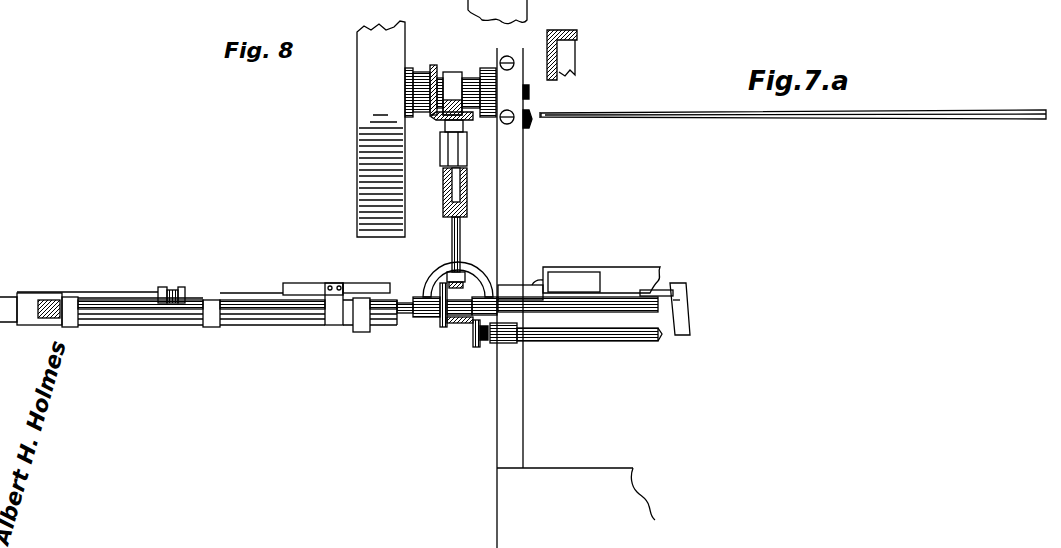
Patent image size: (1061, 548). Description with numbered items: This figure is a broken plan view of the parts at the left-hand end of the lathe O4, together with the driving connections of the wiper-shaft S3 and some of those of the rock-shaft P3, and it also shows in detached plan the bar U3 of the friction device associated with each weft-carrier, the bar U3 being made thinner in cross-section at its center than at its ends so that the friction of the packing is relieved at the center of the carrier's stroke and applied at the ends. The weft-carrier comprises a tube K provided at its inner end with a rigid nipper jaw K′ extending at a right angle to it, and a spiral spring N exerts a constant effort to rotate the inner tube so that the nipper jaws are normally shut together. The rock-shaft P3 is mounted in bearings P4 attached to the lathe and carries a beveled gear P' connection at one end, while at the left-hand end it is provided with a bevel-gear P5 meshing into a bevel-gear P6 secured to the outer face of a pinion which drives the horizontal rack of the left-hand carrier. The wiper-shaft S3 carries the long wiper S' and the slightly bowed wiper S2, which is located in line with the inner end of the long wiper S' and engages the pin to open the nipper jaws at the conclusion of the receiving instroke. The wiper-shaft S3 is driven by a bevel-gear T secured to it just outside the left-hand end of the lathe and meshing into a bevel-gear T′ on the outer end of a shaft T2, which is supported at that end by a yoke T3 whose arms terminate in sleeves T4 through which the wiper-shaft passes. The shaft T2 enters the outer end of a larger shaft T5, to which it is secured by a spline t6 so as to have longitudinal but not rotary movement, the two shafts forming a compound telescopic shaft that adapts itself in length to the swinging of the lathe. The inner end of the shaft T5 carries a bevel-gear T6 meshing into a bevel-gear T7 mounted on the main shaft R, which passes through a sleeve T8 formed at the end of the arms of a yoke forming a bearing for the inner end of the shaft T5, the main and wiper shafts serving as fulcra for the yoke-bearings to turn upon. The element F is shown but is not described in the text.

In FIG. 8, the bevel-gear T7 is at (431, 67).
In FIG. 8, the sleeve T8 is at (455, 71).
In FIG. 8, the main shaft R is at (469, 78).
In FIG. 8, the bevel-gear T6 is at (436, 118).
In FIG. 8, the spline t6 is at (463, 190).
In FIG. 8, the larger shaft T5 is at (444, 193).
In FIG. 8, the shaft T2 is at (451, 239).
In FIG. 8, the yoke T3 is at (410, 341).
In FIG. 8, the bevel-gear T′ is at (486, 276).
In FIG. 8, the bevel-gear T is at (442, 322).
In FIG. 8, the bevel-gear P6 is at (459, 324).
In FIG. 8, the bevel-gear P5 is at (477, 341).
In FIG. 8, the bearings P4 is at (522, 341).
In FIG. 8, the rock-shaft P3 is at (660, 341).
In FIG. 8, the lathe O4 is at (580, 339).
In FIG. 8, the sleeves T4 is at (516, 285).
In FIG. 8, the wiper-shaft S3 is at (556, 299).
In FIG. 8, the rigid nipper jaw K′ is at (673, 310).
In FIG. 8, the spiral spring N is at (177, 282).
In FIG. 8, the long wiper S' is at (124, 322).
In FIG. 8, the tube K is at (226, 296).
In FIG. 8, the wiper S2 is at (356, 283).
In FIG. 8, the channel F is at (564, 52).
In FIG. 8, the beveled gear P' is at (613, 14).
In FIG. 7A, the bar U3 is at (656, 125).